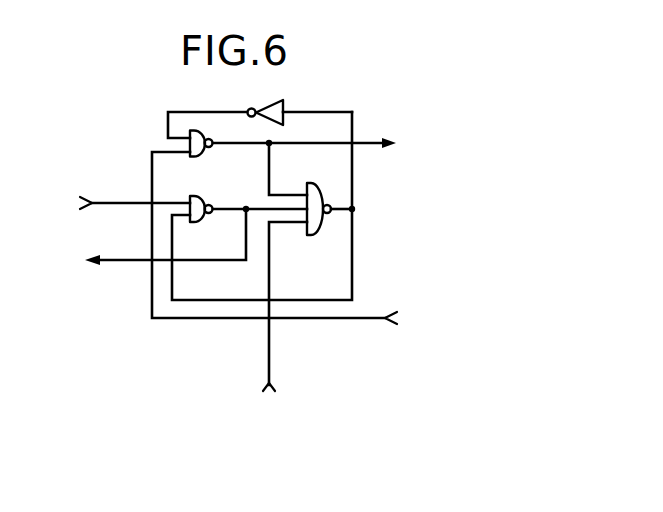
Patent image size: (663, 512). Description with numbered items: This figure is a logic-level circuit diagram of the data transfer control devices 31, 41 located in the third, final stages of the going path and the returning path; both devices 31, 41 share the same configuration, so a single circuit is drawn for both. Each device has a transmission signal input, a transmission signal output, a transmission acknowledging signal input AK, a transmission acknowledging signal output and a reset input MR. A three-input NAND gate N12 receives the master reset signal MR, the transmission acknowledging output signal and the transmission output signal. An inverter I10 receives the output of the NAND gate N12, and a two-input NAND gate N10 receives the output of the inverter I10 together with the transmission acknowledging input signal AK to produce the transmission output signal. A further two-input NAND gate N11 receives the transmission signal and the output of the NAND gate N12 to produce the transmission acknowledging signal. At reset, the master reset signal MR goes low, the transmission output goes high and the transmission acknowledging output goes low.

The data transfer control device 31 is at (536, 162).
The data transfer control device 41 is at (583, 162).
The inverter I10 is at (295, 102).
The 2-input NAND gate N10 is at (207, 157).
The 2-input NAND gate N11 is at (193, 229).
The 3-input NAND gate N12 is at (321, 232).